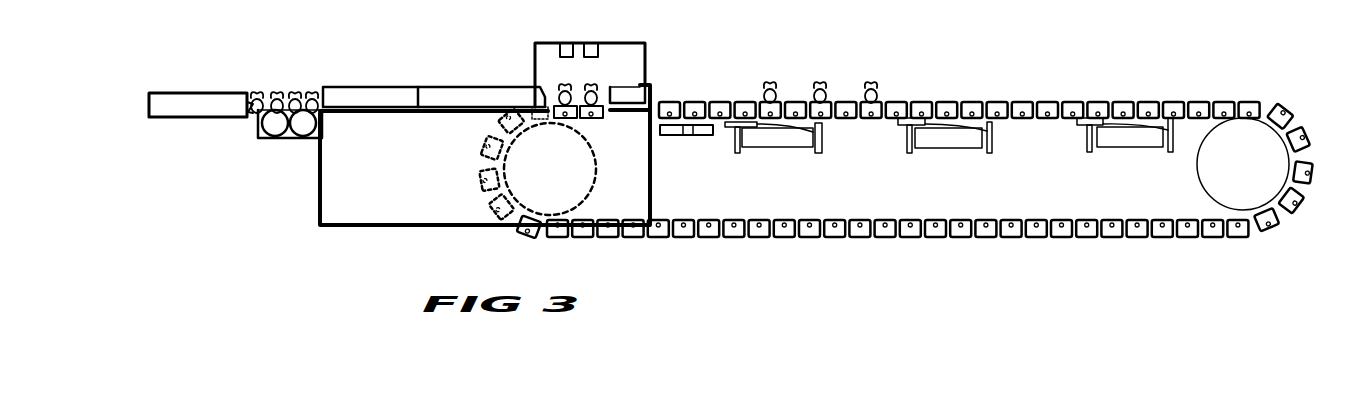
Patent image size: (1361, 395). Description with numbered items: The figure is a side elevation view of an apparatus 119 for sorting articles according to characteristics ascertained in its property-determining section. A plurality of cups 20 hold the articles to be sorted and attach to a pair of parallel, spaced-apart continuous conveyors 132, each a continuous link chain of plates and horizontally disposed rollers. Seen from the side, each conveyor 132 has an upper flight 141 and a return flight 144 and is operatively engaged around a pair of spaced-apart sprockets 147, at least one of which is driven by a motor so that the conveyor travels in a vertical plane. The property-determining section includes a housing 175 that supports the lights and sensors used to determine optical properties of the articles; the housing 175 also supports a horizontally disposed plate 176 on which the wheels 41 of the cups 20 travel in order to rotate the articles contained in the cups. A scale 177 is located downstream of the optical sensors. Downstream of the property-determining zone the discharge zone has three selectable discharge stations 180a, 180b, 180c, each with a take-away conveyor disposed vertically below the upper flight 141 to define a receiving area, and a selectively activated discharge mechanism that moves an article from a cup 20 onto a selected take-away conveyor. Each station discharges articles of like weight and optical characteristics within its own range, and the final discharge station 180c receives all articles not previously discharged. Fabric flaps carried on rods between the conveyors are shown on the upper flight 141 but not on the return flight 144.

The cup 20 is at (842, 102).
The wheel 41 is at (612, 100).
The apparatus 119 is at (713, 278).
The conveyor 132 is at (1267, 102).
The upper flight 141 is at (1163, 102).
The return flight 144 is at (995, 250).
The sprocket 147 is at (1250, 193).
The housing 175 is at (587, 43).
The plate 176 is at (578, 118).
The scale 177 is at (683, 134).
The discharge station 180a is at (789, 117).
The discharge station 180b is at (964, 115).
The discharge station 180c is at (1100, 117).